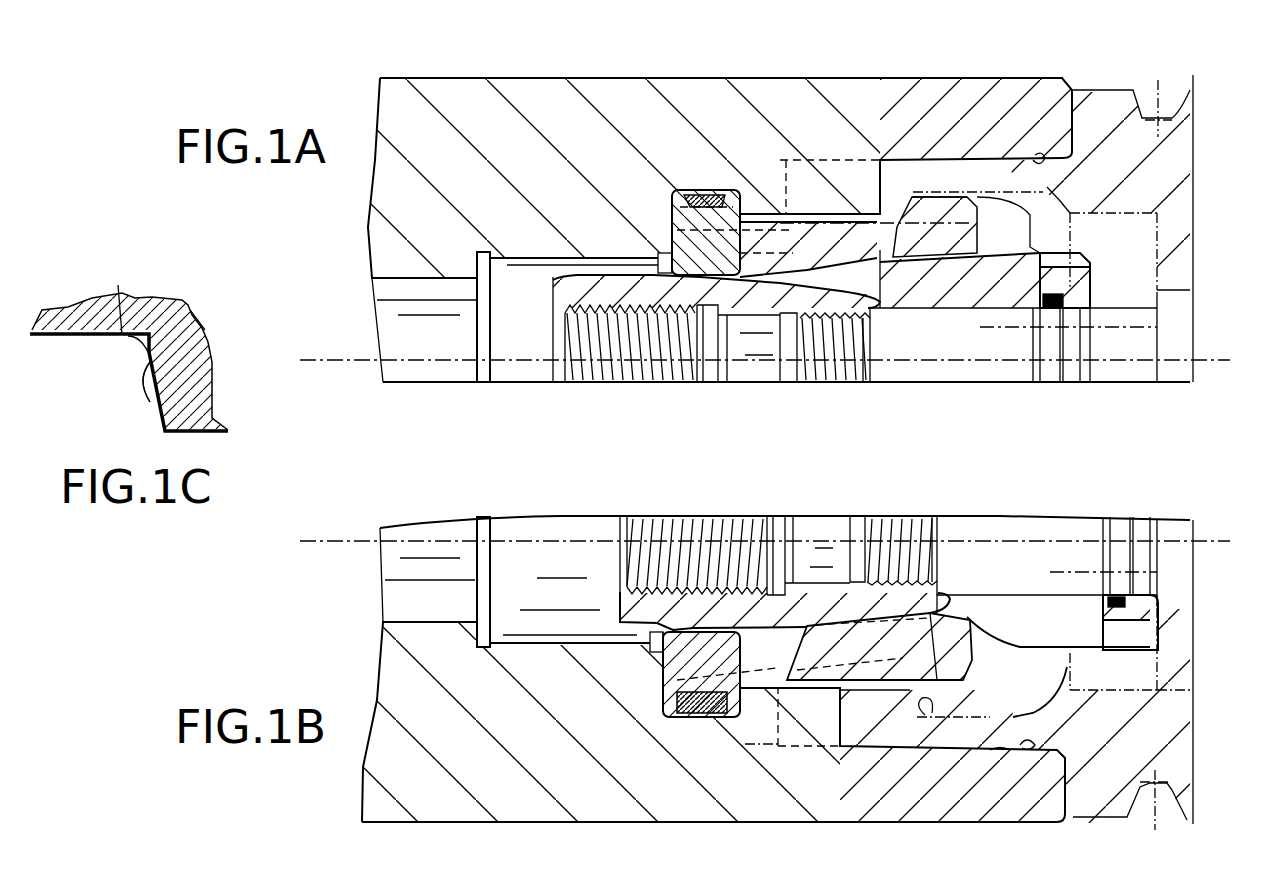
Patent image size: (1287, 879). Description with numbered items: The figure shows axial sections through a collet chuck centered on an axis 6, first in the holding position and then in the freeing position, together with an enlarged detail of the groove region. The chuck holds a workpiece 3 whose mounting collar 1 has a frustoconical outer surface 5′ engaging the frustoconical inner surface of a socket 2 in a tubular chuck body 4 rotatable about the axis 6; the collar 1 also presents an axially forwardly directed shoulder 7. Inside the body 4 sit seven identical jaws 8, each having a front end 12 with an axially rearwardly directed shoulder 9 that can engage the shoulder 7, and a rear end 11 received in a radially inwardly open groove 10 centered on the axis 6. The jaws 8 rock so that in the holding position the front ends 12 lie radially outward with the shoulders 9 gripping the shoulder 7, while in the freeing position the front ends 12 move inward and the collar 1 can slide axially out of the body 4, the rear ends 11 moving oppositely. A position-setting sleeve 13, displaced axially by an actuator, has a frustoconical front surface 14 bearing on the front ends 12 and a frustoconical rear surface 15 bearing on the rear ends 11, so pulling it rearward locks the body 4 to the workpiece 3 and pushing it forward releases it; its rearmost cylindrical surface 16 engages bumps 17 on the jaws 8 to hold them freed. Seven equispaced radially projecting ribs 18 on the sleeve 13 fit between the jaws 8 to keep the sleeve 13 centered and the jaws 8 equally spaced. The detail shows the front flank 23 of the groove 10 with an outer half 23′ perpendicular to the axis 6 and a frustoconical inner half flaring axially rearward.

In FIG. 1A, the mounting collar 1 is at (1058, 178).
In FIG. 1B, the socket 2 is at (1013, 680).
In FIG. 1A, the workpiece 3 is at (1173, 160).
In FIG. 1A, the chuck body 4 is at (730, 105).
In FIG. 1C, the chuck body 4 is at (212, 418).
In FIG. 1A, the frustoconical outer surface 5′ is at (915, 200).
In FIG. 1B, the frustoconical outer surface 5′ is at (1000, 750).
In FIG. 1A, the axis 6 is at (329, 360).
In FIG. 1B, the axis 6 is at (329, 541).
In FIG. 1A, the shoulder 7 is at (900, 215).
In FIG. 1B, the shoulder 7 is at (930, 713).
In FIG. 1A, the jaws 8 is at (778, 240).
In FIG. 1B, the jaws 8 is at (742, 645).
In FIG. 1A, the shoulder 9 is at (872, 215).
In FIG. 1B, the shoulder 9 is at (917, 637).
In FIG. 1A, the groove 10 is at (678, 262).
In FIG. 1C, the groove 10 is at (123, 380).
In FIG. 1A, the rear end 11 is at (640, 270).
In FIG. 1A, the front end 12 is at (962, 205).
In FIG. 1A, the sleeve 13 is at (1027, 267).
In FIG. 1A, the frustoconical front surface 14 is at (937, 270).
In FIG. 1A, the frustoconical rear surface 15 is at (607, 262).
In FIG. 1A, the rearmost cylindrical surface 16 is at (590, 267).
In FIG. 1B, the bumps 17 is at (670, 632).
In FIG. 1A, the ribs 18 is at (880, 270).
In FIG. 1B, the ribs 18 is at (933, 680).
In FIG. 1B, the front flank 23 is at (750, 700).
In FIG. 1C, the front flank 23 is at (108, 368).
In FIG. 1C, the outer half 23′ is at (118, 285).